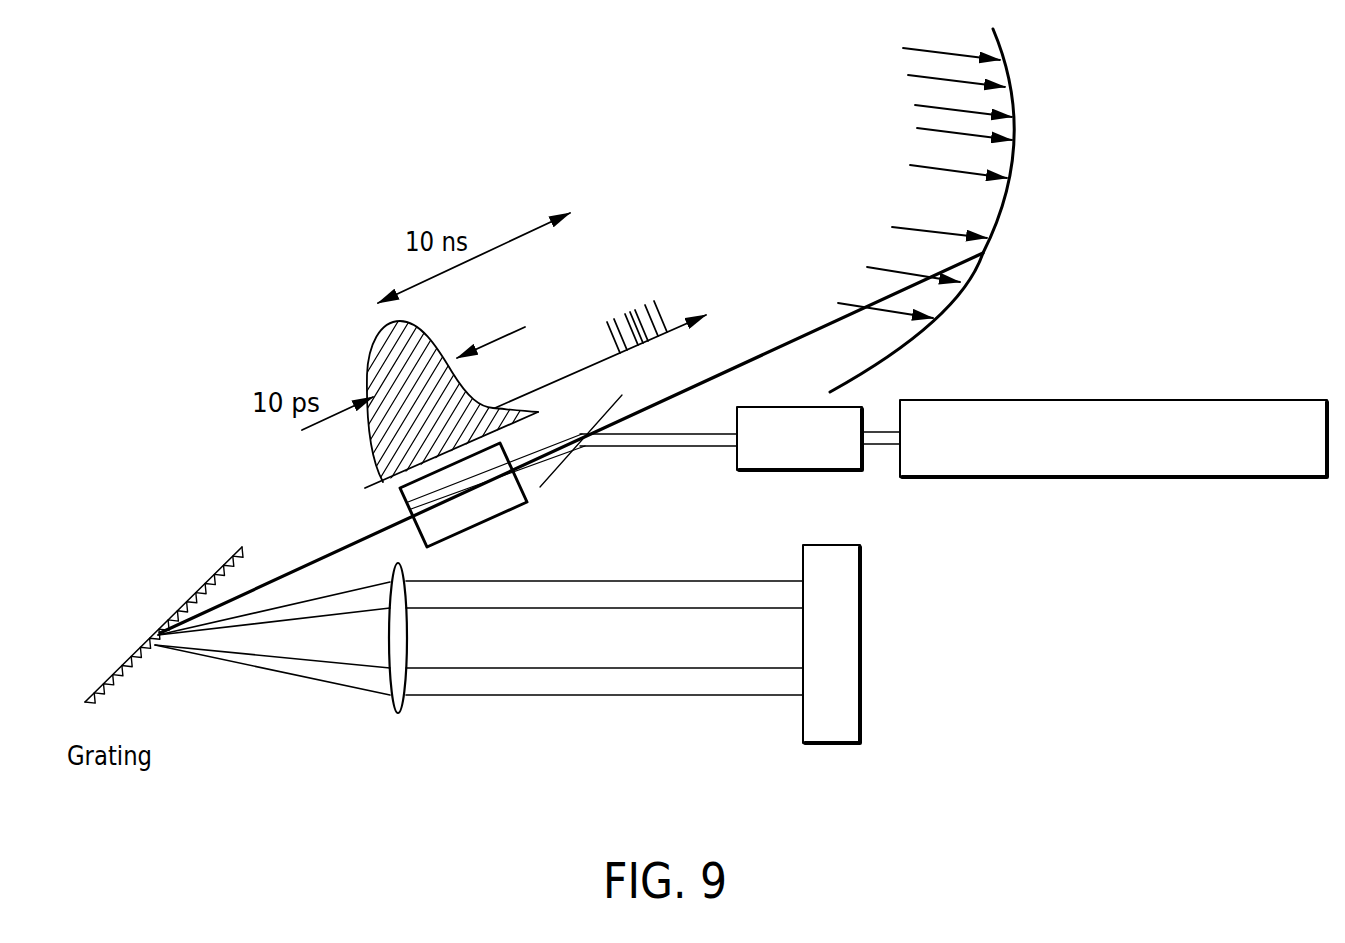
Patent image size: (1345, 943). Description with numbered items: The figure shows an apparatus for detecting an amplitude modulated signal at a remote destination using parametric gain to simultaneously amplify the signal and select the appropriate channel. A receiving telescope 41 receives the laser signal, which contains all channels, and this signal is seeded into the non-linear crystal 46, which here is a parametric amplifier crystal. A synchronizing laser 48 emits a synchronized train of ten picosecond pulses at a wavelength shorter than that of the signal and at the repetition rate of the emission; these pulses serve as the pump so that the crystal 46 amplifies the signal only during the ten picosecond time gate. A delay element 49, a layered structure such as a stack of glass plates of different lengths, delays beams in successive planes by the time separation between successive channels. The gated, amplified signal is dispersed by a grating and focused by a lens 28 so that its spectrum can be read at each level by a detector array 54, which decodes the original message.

The receiving telescope 41 is at (1015, 157).
The non-linear crystal 46 is at (457, 533).
The synchronizing laser 48 is at (1007, 478).
The delay element 49 is at (805, 472).
The lens 28 is at (393, 707).
The detector array 54 is at (828, 745).